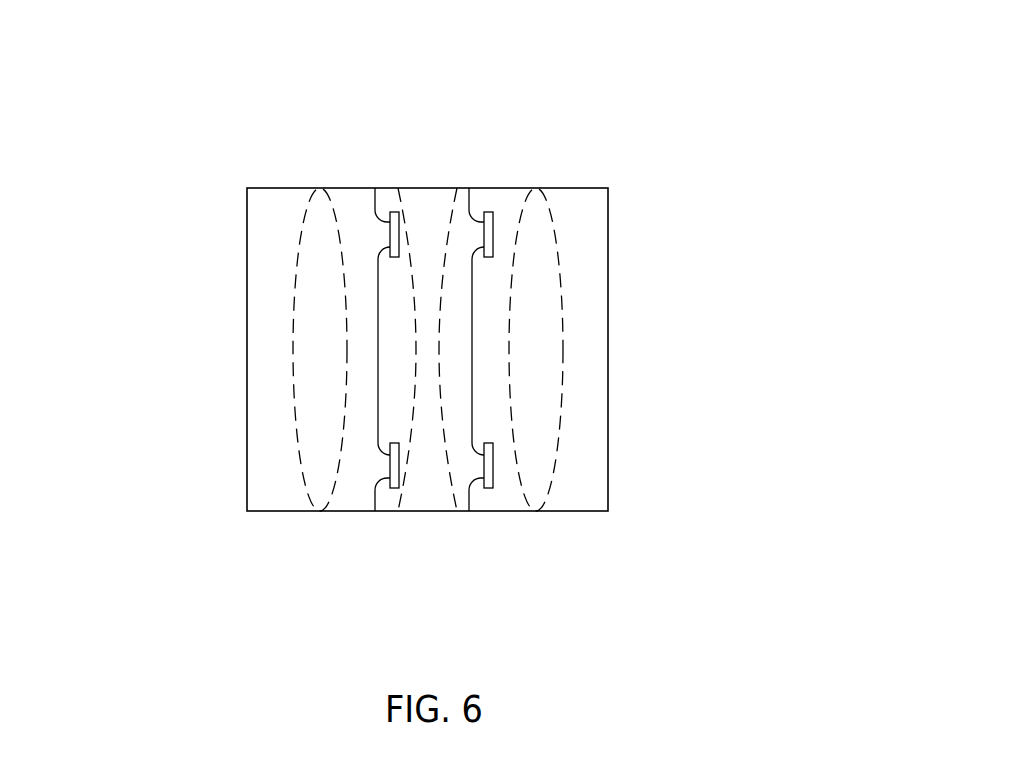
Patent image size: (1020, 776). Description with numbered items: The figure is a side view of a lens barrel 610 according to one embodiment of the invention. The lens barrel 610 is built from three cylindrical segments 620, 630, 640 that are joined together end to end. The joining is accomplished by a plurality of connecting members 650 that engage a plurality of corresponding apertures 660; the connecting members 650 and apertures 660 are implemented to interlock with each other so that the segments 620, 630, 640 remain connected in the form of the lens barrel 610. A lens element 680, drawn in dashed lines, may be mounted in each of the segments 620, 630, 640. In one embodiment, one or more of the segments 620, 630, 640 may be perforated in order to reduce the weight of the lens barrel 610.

The lens barrel 610 is at (198, 122).
The cylindrical segment 620 is at (318, 513).
The cylindrical segment 630 is at (430, 513).
The cylindrical segment 640 is at (575, 513).
The connecting member 650 is at (386, 229).
The aperture 660 is at (393, 212).
The lens element 680 is at (415, 290).